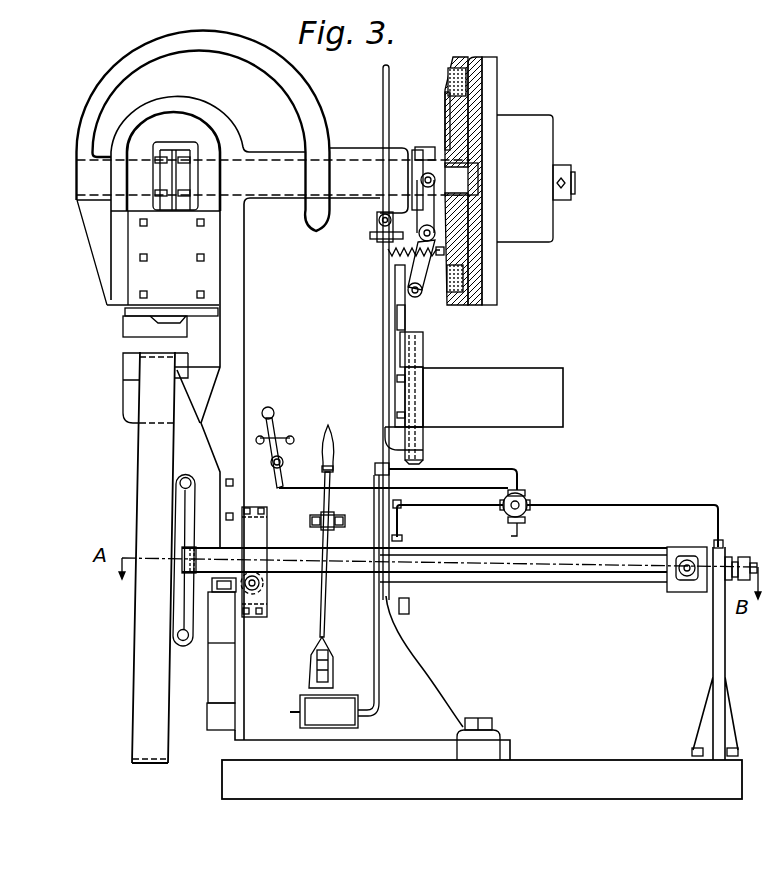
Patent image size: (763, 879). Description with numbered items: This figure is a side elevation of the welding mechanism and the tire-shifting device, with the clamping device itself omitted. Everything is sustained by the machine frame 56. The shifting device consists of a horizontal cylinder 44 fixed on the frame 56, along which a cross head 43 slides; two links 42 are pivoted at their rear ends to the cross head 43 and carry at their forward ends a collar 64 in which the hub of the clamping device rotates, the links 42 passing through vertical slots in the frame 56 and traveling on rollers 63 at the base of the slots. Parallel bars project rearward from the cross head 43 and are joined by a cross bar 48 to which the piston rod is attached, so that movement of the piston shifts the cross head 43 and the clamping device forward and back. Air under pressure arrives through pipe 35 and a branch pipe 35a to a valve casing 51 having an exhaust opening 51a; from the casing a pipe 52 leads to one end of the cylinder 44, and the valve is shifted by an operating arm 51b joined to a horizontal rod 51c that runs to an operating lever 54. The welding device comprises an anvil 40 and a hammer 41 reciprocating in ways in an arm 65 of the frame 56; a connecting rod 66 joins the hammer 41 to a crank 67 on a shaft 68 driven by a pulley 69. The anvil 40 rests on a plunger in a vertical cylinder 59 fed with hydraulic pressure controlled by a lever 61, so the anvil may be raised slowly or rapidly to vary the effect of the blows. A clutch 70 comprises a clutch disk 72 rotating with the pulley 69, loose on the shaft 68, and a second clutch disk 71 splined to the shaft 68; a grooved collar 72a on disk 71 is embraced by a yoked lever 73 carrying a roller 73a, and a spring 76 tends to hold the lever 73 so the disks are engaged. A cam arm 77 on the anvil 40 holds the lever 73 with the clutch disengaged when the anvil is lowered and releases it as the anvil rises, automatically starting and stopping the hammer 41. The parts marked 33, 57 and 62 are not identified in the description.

The pipe 33 is at (445, 505).
The pipe 35 is at (300, 712).
The branch pipe 35a is at (504, 469).
The anvil 40 is at (128, 403).
The hammer 41 is at (123, 327).
The links 42 is at (450, 572).
The cross head 43 is at (680, 560).
The horizontal cylinder 44 is at (475, 548).
The cross bar 48 is at (740, 557).
The valve casing 51 is at (525, 500).
The exhaust opening 51a is at (501, 534).
The operating arm 51b is at (528, 512).
The horizontal rod 51c is at (297, 486).
The pipe 52 is at (690, 505).
The operating lever 54 is at (274, 416).
The frame 56 is at (352, 303).
The rod 57 is at (423, 352).
The vertical cylinder 59 is at (224, 677).
The lever 61 is at (330, 435).
The plate 62 is at (260, 530).
The rollers 63 is at (262, 590).
The collar 64 is at (181, 508).
The arm 65 is at (117, 238).
The connecting rod 66 is at (173, 197).
The crank 67 is at (177, 157).
The shaft 68 is at (77, 170).
The pulley 69 is at (535, 115).
The clutch 70 is at (490, 82).
The second clutch disk 71 is at (445, 98).
The clutch disk 72 is at (453, 102).
The grooved collar 72a is at (420, 150).
The yoked lever 73 is at (425, 275).
The roller 73a is at (427, 298).
The spring 76 is at (383, 250).
The cam arm 77 is at (412, 283).